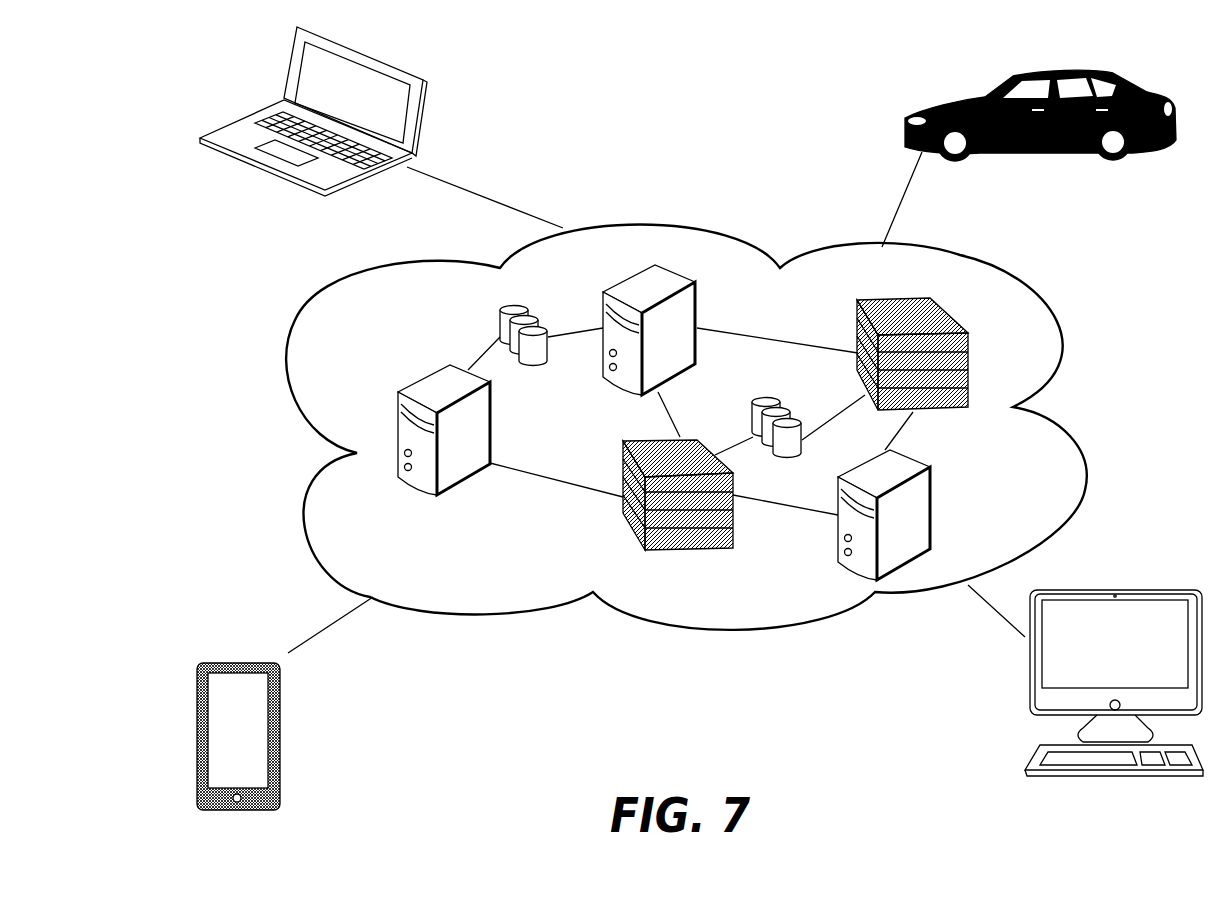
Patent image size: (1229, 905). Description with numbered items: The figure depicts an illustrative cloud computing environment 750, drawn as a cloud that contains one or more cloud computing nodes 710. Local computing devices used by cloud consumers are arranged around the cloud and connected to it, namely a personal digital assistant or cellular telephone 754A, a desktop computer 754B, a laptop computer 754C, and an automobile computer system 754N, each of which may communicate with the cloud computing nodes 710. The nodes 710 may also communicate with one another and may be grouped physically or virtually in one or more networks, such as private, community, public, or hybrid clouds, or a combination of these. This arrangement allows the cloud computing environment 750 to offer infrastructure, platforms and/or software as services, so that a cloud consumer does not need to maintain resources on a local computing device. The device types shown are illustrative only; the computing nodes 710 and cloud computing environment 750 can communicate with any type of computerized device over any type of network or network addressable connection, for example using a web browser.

The cloud computing nodes 710 is at (1050, 450).
The cloud computing environment 750 is at (317, 308).
The personal digital assistant or cellular telephone 754A is at (238, 672).
The desktop computer 754B is at (1160, 588).
The laptop computer 754C is at (407, 72).
The automobile computer system 754N is at (1037, 73).